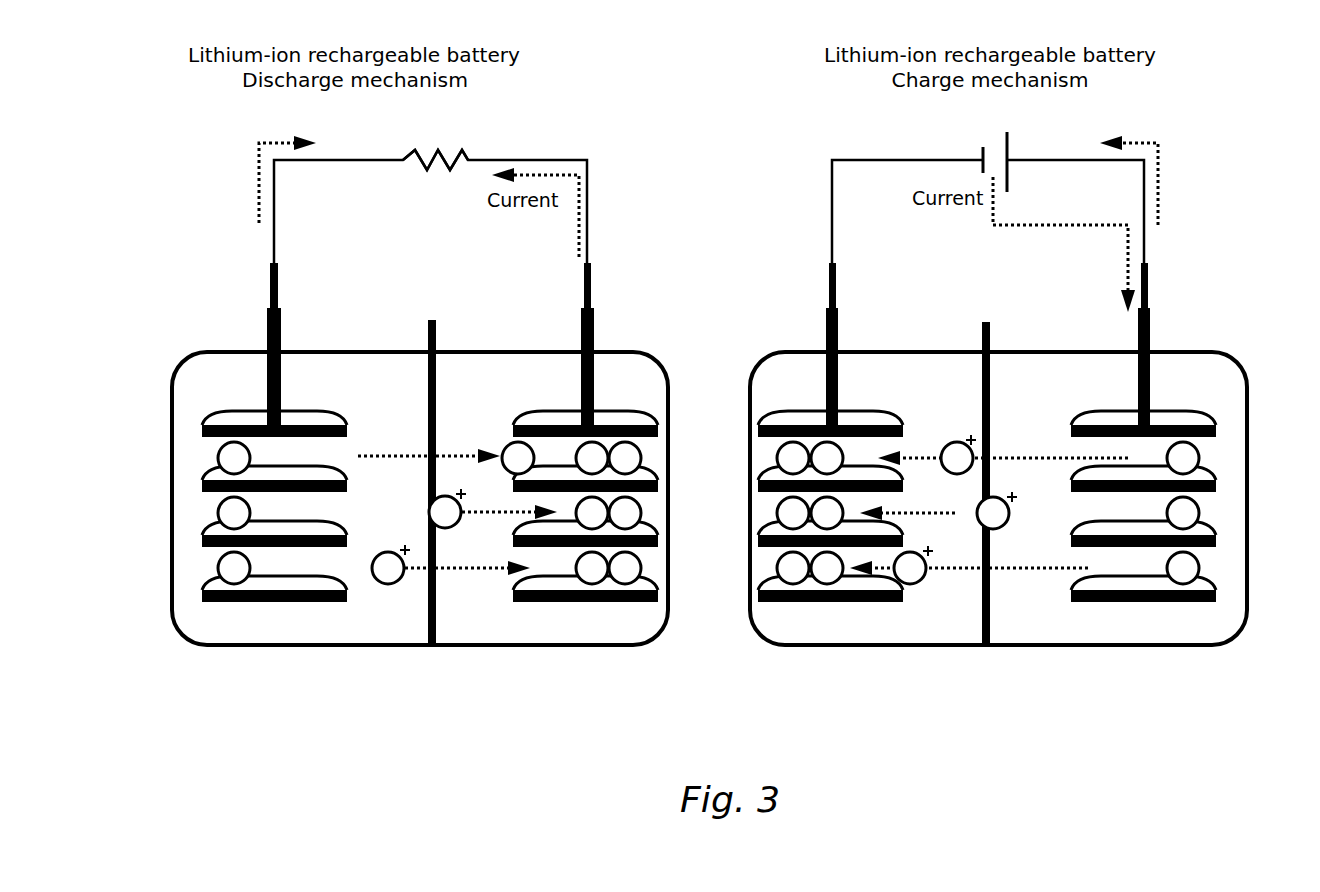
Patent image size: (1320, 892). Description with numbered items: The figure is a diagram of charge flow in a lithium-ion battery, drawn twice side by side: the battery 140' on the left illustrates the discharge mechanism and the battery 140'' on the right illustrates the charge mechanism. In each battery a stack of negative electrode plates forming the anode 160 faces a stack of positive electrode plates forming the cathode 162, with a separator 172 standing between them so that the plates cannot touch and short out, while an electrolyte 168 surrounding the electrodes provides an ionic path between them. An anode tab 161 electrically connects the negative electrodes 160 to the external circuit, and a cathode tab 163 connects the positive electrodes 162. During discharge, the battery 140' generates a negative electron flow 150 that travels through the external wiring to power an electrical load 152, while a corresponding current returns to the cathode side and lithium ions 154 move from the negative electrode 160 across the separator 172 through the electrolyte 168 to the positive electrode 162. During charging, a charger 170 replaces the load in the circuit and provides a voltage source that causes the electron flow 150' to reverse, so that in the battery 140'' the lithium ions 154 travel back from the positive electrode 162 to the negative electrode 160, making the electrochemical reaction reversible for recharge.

The lithium-ion battery 140' is at (392, 466).
The lithium-ion battery 140'' is at (1030, 478).
The electron flow 150 is at (234, 181).
The electron flow 150' is at (1177, 180).
The electrical load 152 is at (430, 170).
The lithium ions 154 is at (508, 445).
The negative electrode 160 is at (203, 593).
The anode tab 161 is at (272, 300).
The positive electrode 162 is at (657, 592).
The cathode tab 163 is at (590, 300).
The electrolyte 168 is at (382, 623).
The charger 170 is at (987, 145).
The separator 172 is at (437, 340).